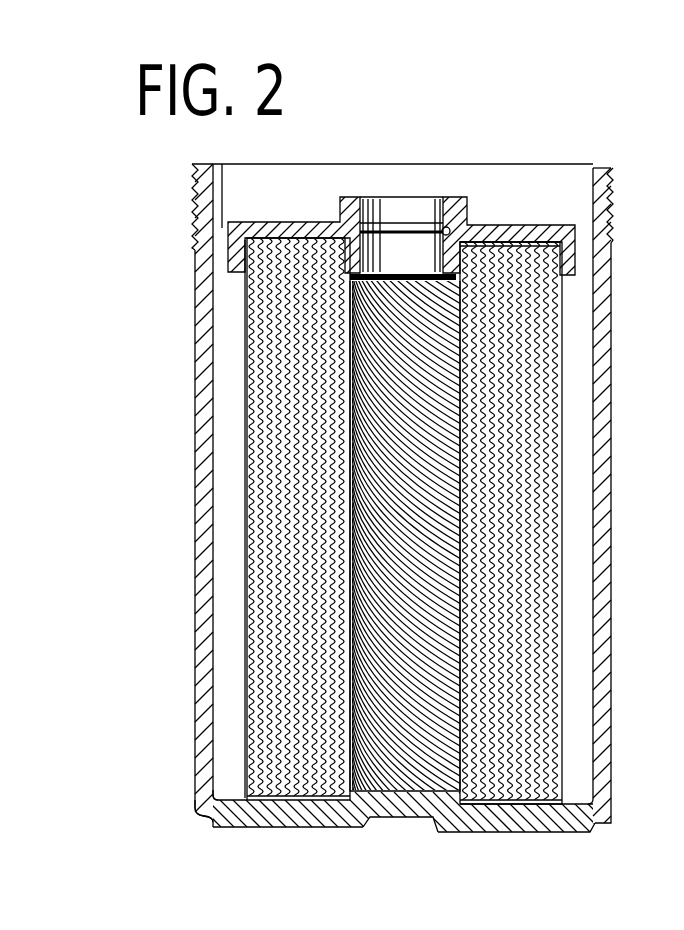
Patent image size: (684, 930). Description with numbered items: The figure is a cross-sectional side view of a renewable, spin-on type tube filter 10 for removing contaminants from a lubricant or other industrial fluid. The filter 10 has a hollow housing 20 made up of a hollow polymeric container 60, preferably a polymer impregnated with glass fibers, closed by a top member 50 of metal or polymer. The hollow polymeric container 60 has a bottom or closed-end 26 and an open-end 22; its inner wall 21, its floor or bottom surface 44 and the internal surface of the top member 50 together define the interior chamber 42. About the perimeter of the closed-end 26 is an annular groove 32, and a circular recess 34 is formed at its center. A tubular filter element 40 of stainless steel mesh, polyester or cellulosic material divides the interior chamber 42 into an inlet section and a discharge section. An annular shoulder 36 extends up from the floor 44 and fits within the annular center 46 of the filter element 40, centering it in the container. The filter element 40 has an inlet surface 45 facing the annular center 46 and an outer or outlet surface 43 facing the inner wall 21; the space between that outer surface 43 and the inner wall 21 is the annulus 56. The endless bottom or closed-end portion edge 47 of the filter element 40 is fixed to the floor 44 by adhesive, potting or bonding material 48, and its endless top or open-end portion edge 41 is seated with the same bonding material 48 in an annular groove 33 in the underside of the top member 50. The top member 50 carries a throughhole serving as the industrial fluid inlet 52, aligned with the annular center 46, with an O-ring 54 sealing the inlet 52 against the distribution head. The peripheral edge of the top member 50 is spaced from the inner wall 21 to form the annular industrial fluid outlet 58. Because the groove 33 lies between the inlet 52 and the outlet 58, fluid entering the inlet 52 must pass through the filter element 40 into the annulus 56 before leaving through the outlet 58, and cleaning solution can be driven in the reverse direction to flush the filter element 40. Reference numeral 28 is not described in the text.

The filter 10 is at (146, 463).
The hollow housing 20 is at (197, 428).
The inner wall 21 is at (598, 476).
The open-end 22 is at (538, 165).
The bottom or closed-end 26 is at (361, 828).
The threads 28 is at (192, 181).
The annular groove 32 is at (200, 816).
The annular groove 33 is at (561, 257).
The circular recess 34 is at (415, 818).
The annular shoulder 36 is at (497, 806).
The filter element 40 is at (283, 478).
The top or open-end portion edge 41 is at (536, 240).
The interior chamber 42 is at (237, 614).
The outer or outlet surface 43 is at (245, 361).
The floor or bottom surface 44 is at (228, 797).
The inlet surface 45 is at (352, 556).
The annular center 46 is at (420, 633).
The bottom or closed-end portion edge 47 is at (535, 780).
The bonding material 48 is at (520, 244).
The top member 50 is at (305, 221).
The industrial fluid inlet 52 is at (425, 212).
The O-ring 54 is at (415, 222).
The annulus 56 is at (580, 408).
The industrial fluid outlet 58 is at (222, 165).
The hollow polymeric container 60 is at (610, 368).